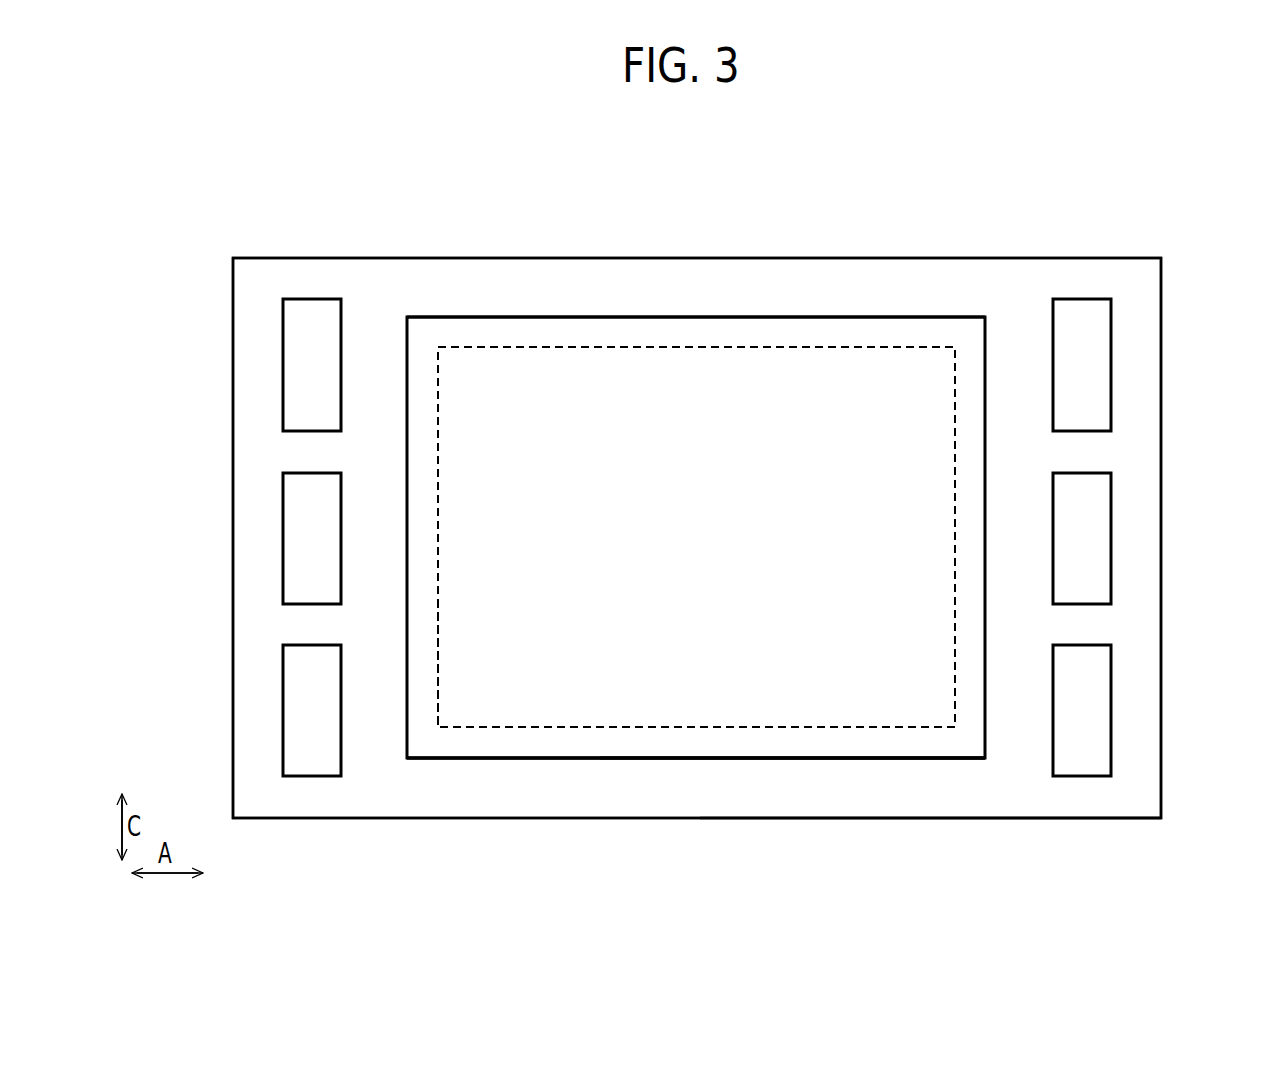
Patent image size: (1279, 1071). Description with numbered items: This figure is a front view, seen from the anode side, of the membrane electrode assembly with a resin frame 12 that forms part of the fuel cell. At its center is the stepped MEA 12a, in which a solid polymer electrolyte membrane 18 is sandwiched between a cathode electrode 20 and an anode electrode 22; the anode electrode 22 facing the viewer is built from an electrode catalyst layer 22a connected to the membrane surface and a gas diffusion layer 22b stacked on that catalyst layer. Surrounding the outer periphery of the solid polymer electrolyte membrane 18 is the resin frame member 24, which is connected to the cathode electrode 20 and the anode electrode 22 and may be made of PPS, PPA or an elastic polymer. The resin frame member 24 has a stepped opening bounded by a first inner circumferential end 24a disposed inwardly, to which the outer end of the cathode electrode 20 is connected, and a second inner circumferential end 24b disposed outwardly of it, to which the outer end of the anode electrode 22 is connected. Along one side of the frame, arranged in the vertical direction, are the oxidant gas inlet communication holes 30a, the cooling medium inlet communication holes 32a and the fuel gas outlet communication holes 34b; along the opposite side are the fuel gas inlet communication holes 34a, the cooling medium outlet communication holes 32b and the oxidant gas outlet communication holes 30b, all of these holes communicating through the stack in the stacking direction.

The membrane electrode assembly with a resin frame 12 is at (697, 502).
The stepped MEA 12a is at (696, 258).
The solid polymer electrolyte membrane 18 is at (930, 823).
The cathode electrode 20 is at (696, 469).
The anode electrode 22 is at (696, 477).
The electrode catalyst layer 22a is at (696, 822).
The gas diffusion layer 22b is at (696, 818).
The resin frame member 24 is at (727, 527).
The first inner circumferential end 24a is at (792, 817).
The second inner circumferential end 24b is at (462, 743).
The oxidant gas inlet communication holes 30a is at (1163, 365).
The oxidant gas outlet communication holes 30b is at (226, 710).
The cooling medium inlet communication holes 32a is at (1139, 538).
The cooling medium outlet communication holes 32b is at (251, 538).
The fuel gas inlet communication holes 34a is at (226, 365).
The fuel gas outlet communication holes 34b is at (1163, 710).